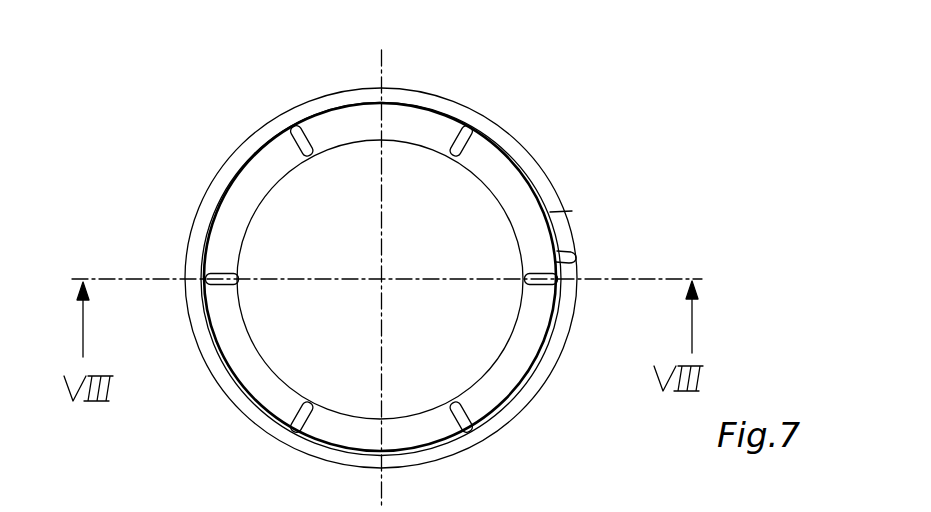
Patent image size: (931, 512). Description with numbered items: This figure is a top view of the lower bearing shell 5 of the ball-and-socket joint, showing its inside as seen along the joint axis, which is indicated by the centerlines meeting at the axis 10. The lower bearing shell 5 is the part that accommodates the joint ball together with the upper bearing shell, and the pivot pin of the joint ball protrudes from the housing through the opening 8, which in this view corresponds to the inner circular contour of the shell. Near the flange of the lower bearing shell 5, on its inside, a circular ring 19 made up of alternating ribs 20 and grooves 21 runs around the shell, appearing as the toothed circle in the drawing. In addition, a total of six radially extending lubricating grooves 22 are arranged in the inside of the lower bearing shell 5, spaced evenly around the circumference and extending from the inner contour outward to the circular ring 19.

The lower bearing shell 5 is at (215, 398).
The opening 8 is at (418, 412).
The central axis 10 is at (380, 282).
The circular ring 19 is at (487, 158).
The ribs 20 is at (549, 224).
The grooves 21 is at (563, 250).
The lubricating grooves 22 is at (298, 133).